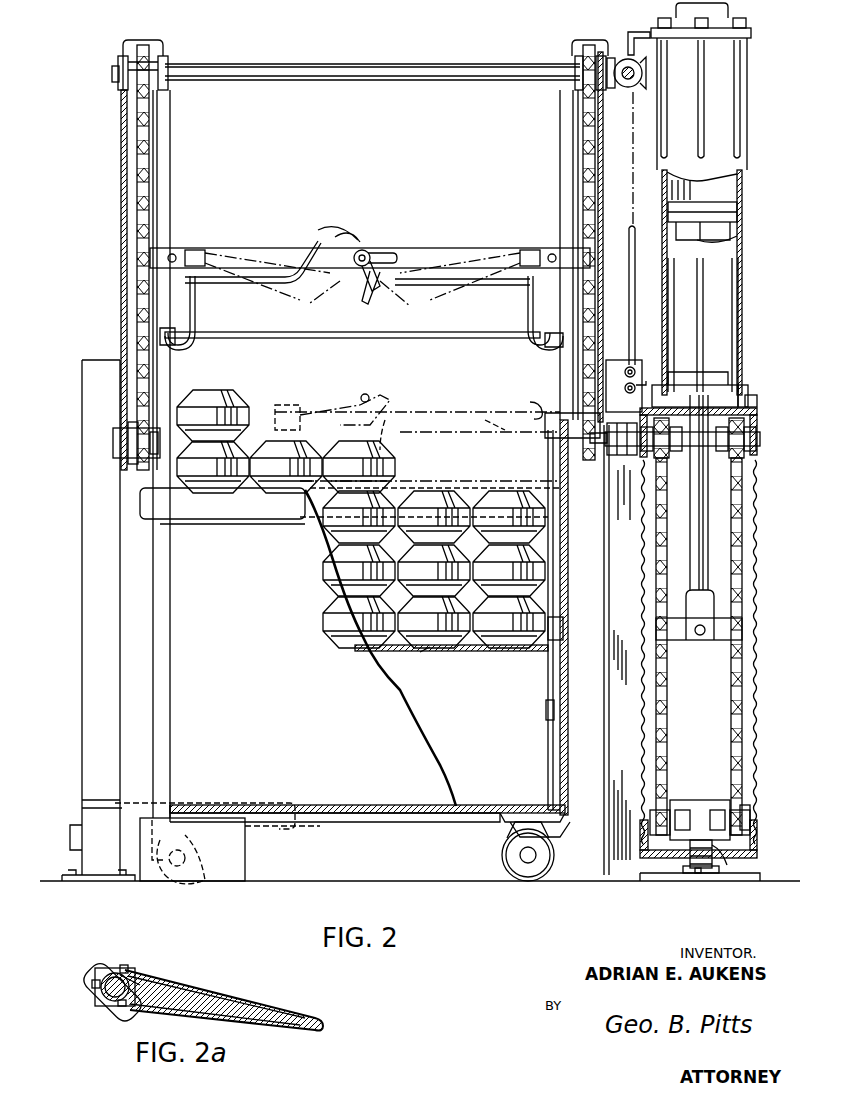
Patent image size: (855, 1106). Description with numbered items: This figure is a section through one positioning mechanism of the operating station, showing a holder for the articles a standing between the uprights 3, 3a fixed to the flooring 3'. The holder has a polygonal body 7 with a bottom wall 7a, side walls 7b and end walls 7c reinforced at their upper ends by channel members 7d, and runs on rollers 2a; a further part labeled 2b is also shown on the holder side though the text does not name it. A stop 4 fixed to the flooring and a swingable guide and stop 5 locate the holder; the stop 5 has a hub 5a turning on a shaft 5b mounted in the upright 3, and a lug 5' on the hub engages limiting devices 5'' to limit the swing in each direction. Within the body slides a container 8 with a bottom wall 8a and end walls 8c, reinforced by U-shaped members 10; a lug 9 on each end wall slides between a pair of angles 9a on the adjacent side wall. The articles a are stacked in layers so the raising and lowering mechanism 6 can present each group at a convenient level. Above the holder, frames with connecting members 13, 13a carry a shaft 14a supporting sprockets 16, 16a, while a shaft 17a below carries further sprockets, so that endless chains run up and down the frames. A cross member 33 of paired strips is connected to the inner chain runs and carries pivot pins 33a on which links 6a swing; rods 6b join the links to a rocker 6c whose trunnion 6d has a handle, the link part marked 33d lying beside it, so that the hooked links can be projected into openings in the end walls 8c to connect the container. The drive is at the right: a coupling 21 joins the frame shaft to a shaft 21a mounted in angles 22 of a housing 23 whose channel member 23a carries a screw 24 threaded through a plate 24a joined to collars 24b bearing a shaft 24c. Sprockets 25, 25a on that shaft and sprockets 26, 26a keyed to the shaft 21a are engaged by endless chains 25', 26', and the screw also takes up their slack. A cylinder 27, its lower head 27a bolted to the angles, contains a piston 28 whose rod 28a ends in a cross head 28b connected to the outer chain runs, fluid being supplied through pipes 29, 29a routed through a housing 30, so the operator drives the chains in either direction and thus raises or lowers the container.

In FIG. 2, the rollers 2a is at (525, 878).
In FIG. 2, the bracket 2b is at (618, 317).
In FIG. 2a, the upright 3 is at (113, 975).
In FIG. 2, the upright 3a is at (597, 775).
In FIG. 2, the flooring 3' is at (378, 858).
In FIG. 2, the stop 4 is at (230, 862).
In FIG. 2, the swingable guide and stop 5 is at (322, 620).
In FIG. 2a, the swingable guide and stop 5 is at (224, 991).
In FIG. 2a, the hub 5a is at (110, 1000).
In FIG. 2a, the shaft 5b is at (140, 978).
In FIG. 2a, the lug 5' is at (66, 992).
In FIG. 2a, the limiting devices 5'' is at (96, 979).
In FIG. 2, the raising and lowering mechanism 6 is at (624, 218).
In FIG. 2, the links 6a is at (195, 330).
In FIG. 2, the rods 6b is at (282, 283).
In FIG. 2, the rocker 6c is at (372, 296).
In FIG. 2, the trunnion 6d is at (365, 246).
In FIG. 2, the body 7 is at (590, 743).
In FIG. 2, the bottom wall 7a is at (475, 822).
In FIG. 2, the side walls 7b is at (165, 692).
In FIG. 2, the end walls 7c is at (400, 715).
In FIG. 2, the channel members 7d is at (210, 520).
In FIG. 2, the container 8 is at (520, 655).
In FIG. 2, the bottom wall 8a is at (455, 655).
In FIG. 2, the end walls 8c is at (200, 388).
In FIG. 2, the lug 9 is at (555, 710).
In FIG. 2, the angles 9a is at (548, 702).
In FIG. 2, the U-shaped members 10 is at (350, 338).
In FIG. 2, the connecting member 13 is at (112, 432).
In FIG. 2, the connecting member 13a is at (115, 90).
In FIG. 2, the shaft 14a is at (372, 80).
In FIG. 2, the sprocket 16 is at (160, 58).
In FIG. 2, the sprocket 16a is at (578, 56).
In FIG. 2, the shaft 17a is at (128, 460).
In FIG. 2, the coupling 21 is at (625, 458).
In FIG. 2, the shaft 21a is at (760, 440).
In FIG. 2, the angles 22 is at (700, 410).
In FIG. 2, the housing 23 is at (790, 563).
In FIG. 2, the channel member 23a is at (757, 835).
In FIG. 2, the screw 24 is at (732, 864).
In FIG. 2, the plate 24a is at (690, 868).
In FIG. 2, the collars 24b is at (680, 800).
In FIG. 2, the shaft 24c is at (750, 812).
In FIG. 2, the sprocket 25 is at (686, 858).
In FIG. 2, the sprocket 25a is at (712, 850).
In FIG. 2, the endless chain 25' is at (686, 687).
In FIG. 2, the sprocket 26 is at (699, 458).
In FIG. 2, the sprocket 26a is at (745, 462).
In FIG. 2, the endless chain 26' is at (712, 718).
In FIG. 2, the cylinder 27 is at (740, 236).
In FIG. 2, the lower head 27a is at (752, 395).
In FIG. 2, the piston 28 is at (735, 200).
In FIG. 2, the rod 28a is at (740, 535).
In FIG. 2, the cross head 28b is at (742, 625).
In FIG. 2, the fluid supply pipe 29 is at (640, 370).
In FIG. 2, the fluid supply pipe 29a is at (638, 22).
In FIG. 2, the housing 30 is at (623, 364).
In FIG. 2, the cross member 33 is at (438, 258).
In FIG. 2, the pivot pins 33a is at (172, 254).
In FIG. 2, the link 33d is at (385, 251).
In FIG. 2, the articles a is at (230, 400).